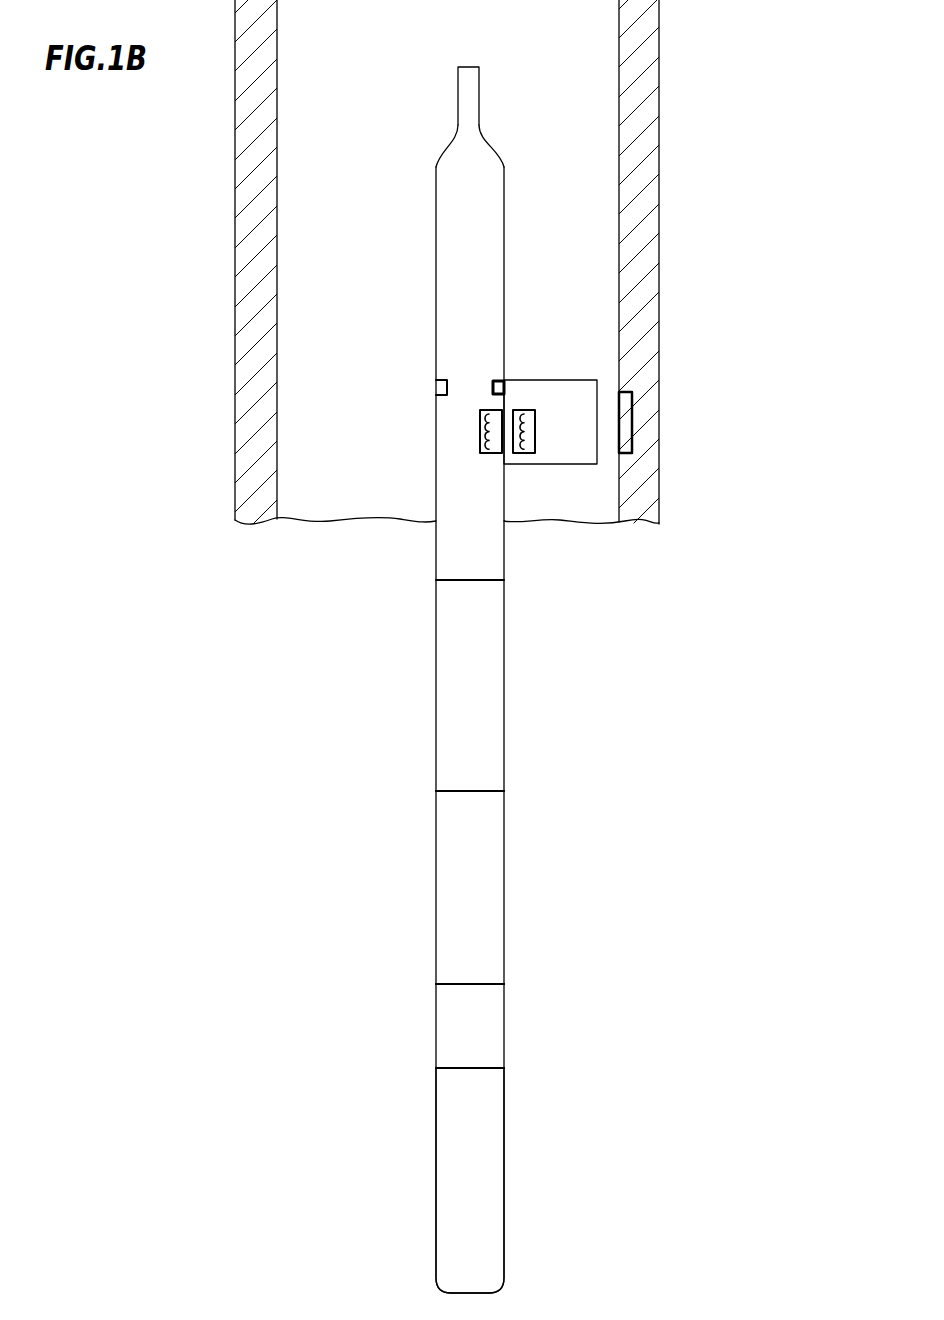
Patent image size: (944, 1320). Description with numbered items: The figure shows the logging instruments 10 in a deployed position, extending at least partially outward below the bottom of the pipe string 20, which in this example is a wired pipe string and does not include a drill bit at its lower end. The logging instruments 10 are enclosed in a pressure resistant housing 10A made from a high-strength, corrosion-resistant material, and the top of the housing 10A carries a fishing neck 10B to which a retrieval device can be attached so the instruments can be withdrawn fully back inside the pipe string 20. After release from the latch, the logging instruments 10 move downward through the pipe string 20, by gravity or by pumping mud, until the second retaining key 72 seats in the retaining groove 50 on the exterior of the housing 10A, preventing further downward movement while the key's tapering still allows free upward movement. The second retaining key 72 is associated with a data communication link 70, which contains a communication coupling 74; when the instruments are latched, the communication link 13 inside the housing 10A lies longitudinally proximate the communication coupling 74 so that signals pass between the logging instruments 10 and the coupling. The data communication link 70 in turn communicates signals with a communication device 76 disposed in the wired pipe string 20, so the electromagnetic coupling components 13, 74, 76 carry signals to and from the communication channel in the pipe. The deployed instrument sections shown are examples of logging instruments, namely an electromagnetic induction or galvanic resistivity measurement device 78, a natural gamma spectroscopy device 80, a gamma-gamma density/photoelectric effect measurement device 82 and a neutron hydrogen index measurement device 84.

The logging instruments 10 is at (436, 210).
The pressure resistant housing 10A is at (452, 146).
The fishing neck 10B is at (458, 80).
The communication link 13 is at (480, 428).
The pipe string 20 is at (642, 60).
The retaining groove 50 is at (437, 387).
The data communication link 70 is at (598, 390).
The second retaining key 72 is at (500, 388).
The communication coupling 74 is at (528, 446).
The communication device 76 is at (633, 418).
The electromagnetic induction or galvanic resistivity measurement device 78 is at (506, 1123).
The natural gamma spectroscopy device 80 is at (506, 1043).
The gamma-gamma density/photoelectric effect measurement device 82 is at (506, 908).
The neutron hydrogen index measurement device 84 is at (506, 692).